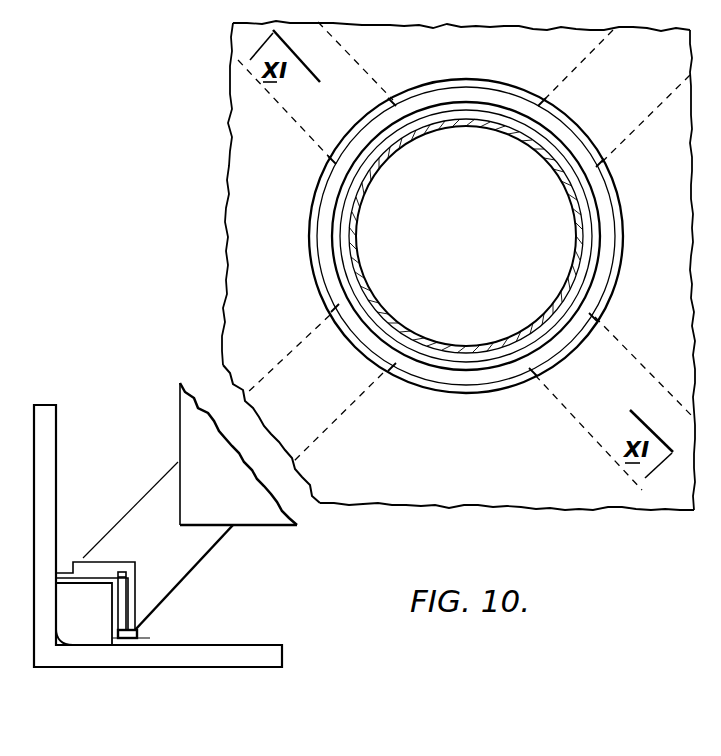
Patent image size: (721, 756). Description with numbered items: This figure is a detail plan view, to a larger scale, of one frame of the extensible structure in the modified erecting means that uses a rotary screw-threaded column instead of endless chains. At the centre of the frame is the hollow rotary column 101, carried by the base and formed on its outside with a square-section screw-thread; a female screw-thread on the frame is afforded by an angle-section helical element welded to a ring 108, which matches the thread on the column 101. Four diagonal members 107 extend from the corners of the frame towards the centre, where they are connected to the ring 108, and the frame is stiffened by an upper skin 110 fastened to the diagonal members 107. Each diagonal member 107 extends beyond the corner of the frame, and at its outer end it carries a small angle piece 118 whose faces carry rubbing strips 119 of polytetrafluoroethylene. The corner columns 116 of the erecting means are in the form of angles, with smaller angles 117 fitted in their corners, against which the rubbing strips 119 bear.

The hollow rotary column 101 is at (567, 262).
The diagonal member 107 is at (345, 391).
The ring 108 is at (603, 203).
The upper skin 110 is at (268, 515).
The column 116 is at (265, 650).
The smaller angle 117 is at (122, 636).
The small angle piece 118 is at (134, 596).
The rubbing strip 119 is at (80, 571).